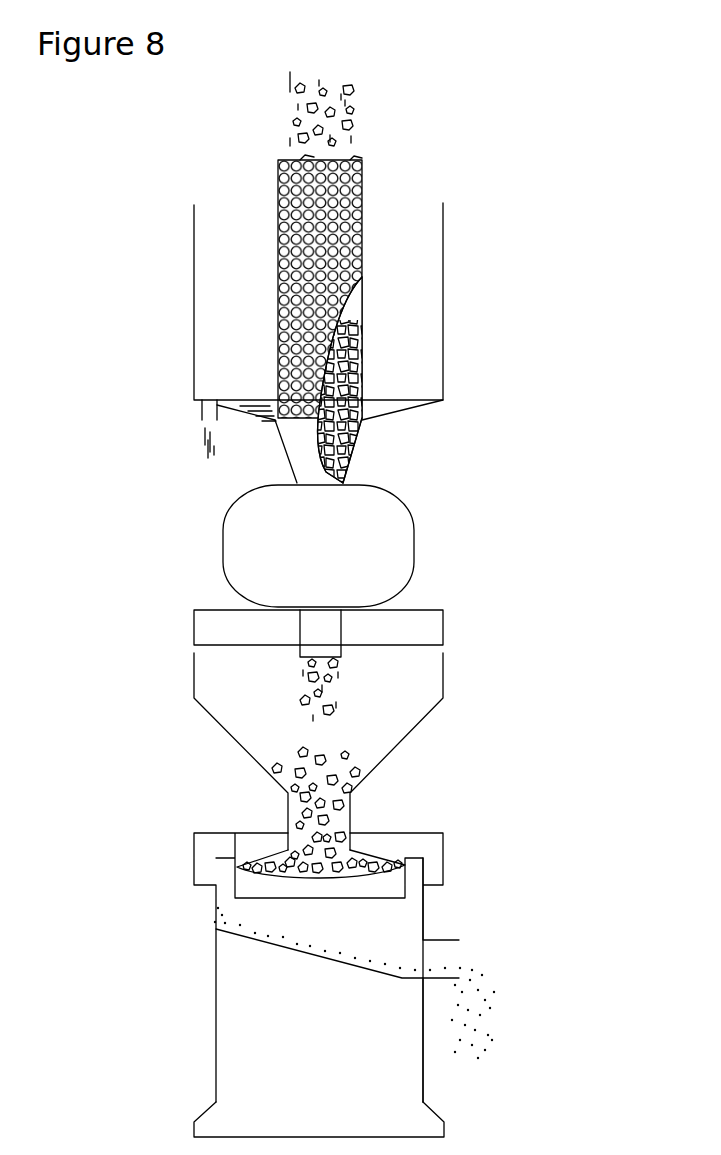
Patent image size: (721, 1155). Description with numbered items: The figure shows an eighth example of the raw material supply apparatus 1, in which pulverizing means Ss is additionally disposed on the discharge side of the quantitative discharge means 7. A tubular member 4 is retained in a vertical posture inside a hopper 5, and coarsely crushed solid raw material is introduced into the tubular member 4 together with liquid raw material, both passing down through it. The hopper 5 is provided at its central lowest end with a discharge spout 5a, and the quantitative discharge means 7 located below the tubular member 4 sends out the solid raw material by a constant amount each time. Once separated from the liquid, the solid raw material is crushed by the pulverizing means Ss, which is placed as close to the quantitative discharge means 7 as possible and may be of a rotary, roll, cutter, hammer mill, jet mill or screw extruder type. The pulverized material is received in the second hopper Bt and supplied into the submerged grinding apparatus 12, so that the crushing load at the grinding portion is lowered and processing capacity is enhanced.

The raw material supply apparatus 1 is at (445, 266).
The tubular member 4 is at (363, 198).
The hopper 5 is at (194, 301).
The discharge spout 5a is at (365, 444).
The quantitative discharge means 7 is at (223, 533).
The pulverizing means Ss is at (443, 620).
The second hopper Bt is at (443, 673).
The submerged grinding apparatus 12 is at (237, 1062).